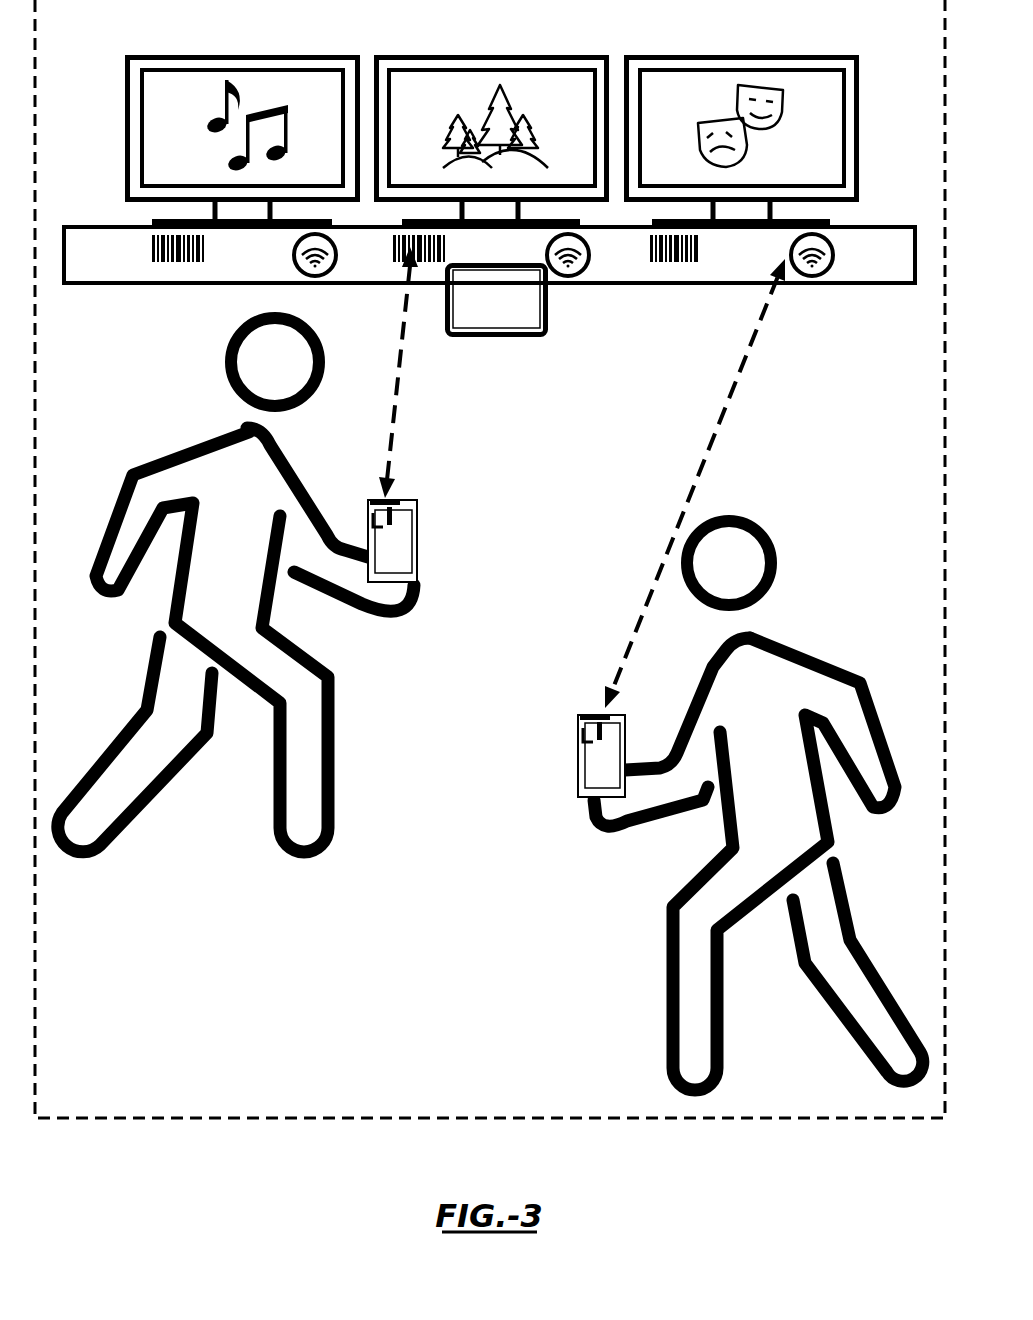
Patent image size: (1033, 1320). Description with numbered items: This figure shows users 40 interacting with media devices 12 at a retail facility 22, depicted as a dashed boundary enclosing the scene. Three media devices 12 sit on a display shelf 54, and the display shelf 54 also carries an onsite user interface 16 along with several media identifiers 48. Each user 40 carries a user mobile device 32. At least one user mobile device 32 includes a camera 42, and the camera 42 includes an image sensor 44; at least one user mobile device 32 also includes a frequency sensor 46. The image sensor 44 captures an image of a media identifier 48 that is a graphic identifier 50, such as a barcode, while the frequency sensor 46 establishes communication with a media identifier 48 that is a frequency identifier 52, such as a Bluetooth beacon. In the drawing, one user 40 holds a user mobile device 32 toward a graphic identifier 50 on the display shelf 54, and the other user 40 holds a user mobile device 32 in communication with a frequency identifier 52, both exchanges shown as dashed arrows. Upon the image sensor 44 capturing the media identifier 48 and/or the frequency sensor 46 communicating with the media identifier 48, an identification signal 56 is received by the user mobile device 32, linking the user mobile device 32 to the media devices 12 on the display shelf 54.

The media device 12 is at (150, 82).
The onsite user interface 16 is at (484, 307).
The environment / venue 22 is at (51, 1110).
The user mobile device 32 is at (471, 621).
The user 40 is at (250, 347).
The camera 42 is at (358, 486).
The image sensor 44 is at (382, 497).
The frequency sensor 46 is at (588, 712).
The media identifier 48 is at (526, 289).
The graphic identifier 50 is at (396, 248).
The frequency identifier 52 is at (822, 263).
The display shelf 54 is at (878, 270).
The identification signal 56 is at (405, 416).